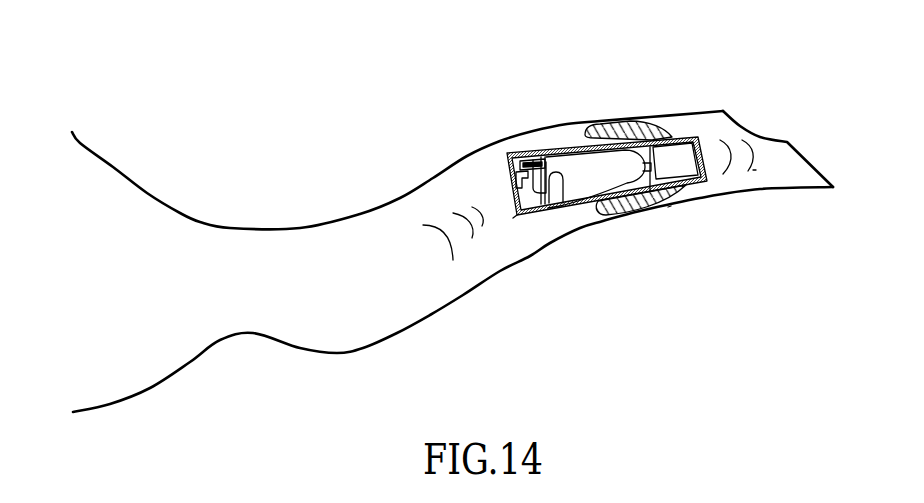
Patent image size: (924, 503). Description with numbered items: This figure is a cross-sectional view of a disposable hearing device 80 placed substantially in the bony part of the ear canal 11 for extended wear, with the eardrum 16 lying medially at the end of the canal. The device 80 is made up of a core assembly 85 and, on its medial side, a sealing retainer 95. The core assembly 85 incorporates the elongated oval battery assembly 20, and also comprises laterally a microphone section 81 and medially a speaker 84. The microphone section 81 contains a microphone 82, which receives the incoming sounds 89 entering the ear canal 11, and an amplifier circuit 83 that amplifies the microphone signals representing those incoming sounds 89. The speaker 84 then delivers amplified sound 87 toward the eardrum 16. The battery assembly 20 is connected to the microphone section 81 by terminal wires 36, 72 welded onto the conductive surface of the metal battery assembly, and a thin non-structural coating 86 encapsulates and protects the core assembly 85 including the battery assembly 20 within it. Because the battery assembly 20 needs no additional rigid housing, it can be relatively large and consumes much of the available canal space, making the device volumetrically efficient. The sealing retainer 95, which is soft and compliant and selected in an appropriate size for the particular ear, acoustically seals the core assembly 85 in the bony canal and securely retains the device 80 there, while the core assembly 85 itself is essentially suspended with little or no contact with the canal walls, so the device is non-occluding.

The ear canal 11 is at (300, 244).
The eardrum 16 is at (815, 153).
The elongated oval battery assembly 20 is at (568, 157).
The terminal wire 36 is at (548, 156).
The terminal wire 72 is at (562, 206).
The disposable hearing device 80 is at (513, 222).
The microphone section 81 is at (543, 220).
The microphone 82 is at (518, 164).
The amplifier circuit 83 is at (512, 152).
The speaker 84 is at (681, 160).
The core assembly 85 is at (578, 136).
The thin non-structural coating 86 is at (598, 218).
The amplified sound 87 is at (753, 170).
The incoming sounds 89 is at (433, 222).
The sealing retainer 95 is at (665, 207).